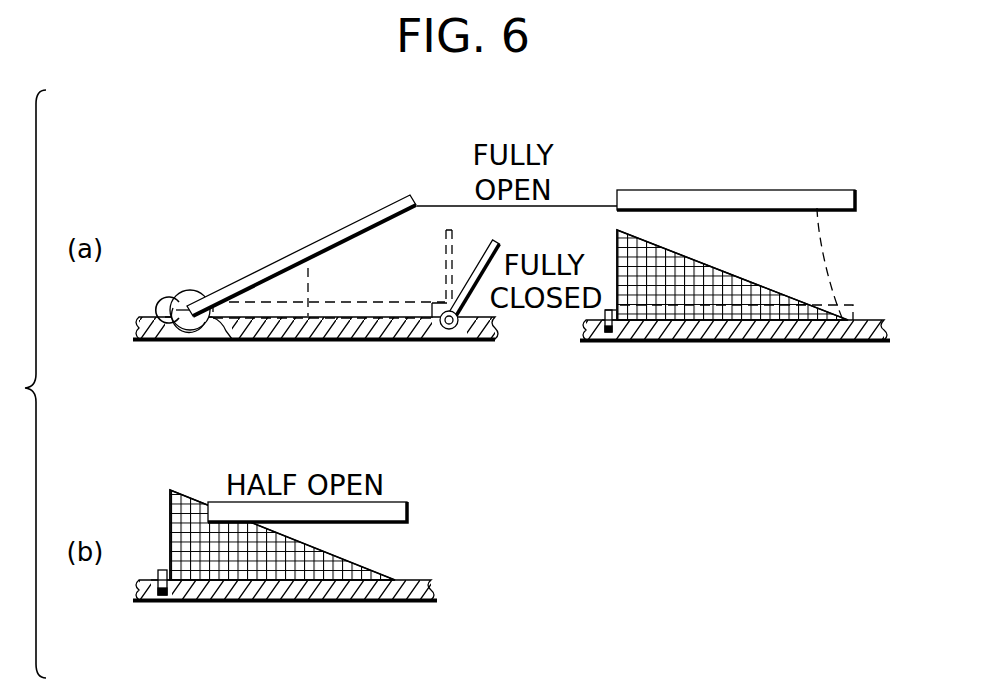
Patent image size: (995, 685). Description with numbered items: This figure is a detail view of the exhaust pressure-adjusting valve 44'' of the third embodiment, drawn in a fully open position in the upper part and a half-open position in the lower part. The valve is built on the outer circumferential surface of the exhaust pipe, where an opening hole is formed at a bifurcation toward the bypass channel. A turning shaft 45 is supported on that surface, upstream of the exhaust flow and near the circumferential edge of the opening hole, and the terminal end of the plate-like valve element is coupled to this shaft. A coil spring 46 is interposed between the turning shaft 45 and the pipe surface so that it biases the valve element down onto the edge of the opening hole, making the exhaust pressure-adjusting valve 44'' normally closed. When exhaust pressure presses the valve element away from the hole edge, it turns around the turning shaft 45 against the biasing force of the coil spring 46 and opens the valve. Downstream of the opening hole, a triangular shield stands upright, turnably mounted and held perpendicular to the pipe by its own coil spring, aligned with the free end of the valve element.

The exhaust pressure-adjusting valve 44'' is at (301, 214).
The turning shaft 45 is at (194, 297).
The coil spring 46 is at (171, 301).